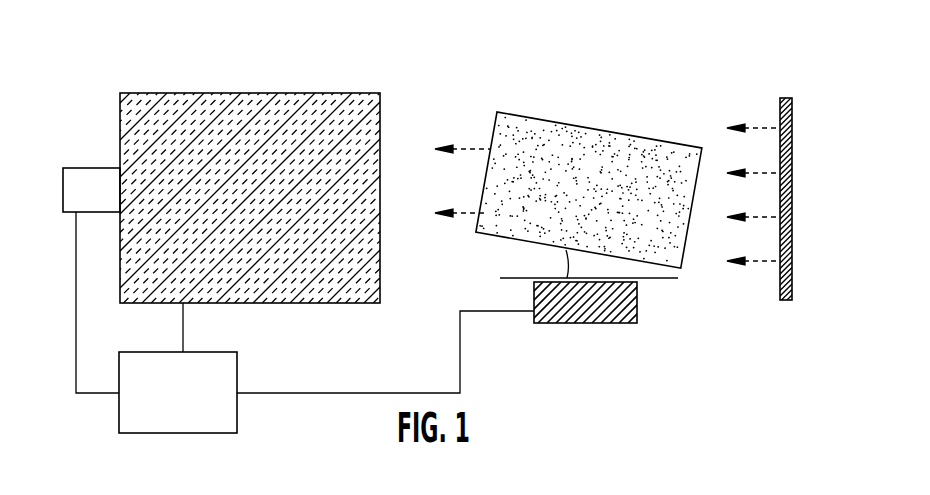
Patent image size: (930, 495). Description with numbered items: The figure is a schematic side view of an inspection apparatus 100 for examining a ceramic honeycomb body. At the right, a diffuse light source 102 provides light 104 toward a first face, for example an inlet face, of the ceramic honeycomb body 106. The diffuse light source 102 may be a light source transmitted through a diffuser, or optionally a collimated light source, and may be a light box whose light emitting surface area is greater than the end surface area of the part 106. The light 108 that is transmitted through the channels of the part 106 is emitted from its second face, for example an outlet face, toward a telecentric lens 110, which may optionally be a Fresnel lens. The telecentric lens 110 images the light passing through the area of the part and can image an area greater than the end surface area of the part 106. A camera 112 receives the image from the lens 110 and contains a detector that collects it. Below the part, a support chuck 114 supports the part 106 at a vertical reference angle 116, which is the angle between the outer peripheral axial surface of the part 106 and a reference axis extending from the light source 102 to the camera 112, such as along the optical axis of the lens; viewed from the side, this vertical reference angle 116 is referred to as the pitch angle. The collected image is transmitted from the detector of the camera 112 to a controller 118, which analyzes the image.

The inspection apparatus 100 is at (134, 30).
The diffuse light source 102 is at (792, 135).
The light 104 is at (753, 128).
The ceramic honeycomb body 106 is at (532, 118).
The transmitted light 108 is at (462, 149).
The telecentric lens 110 is at (290, 93).
The camera 112 is at (63, 183).
The support chuck 114 is at (610, 323).
The vertical reference angle 116 is at (566, 258).
The controller 118 is at (237, 352).